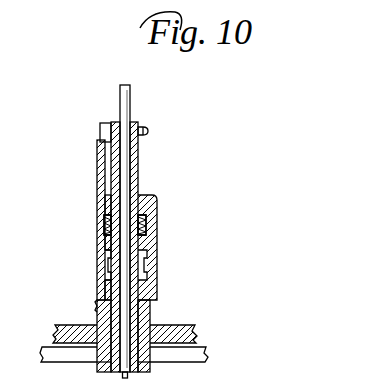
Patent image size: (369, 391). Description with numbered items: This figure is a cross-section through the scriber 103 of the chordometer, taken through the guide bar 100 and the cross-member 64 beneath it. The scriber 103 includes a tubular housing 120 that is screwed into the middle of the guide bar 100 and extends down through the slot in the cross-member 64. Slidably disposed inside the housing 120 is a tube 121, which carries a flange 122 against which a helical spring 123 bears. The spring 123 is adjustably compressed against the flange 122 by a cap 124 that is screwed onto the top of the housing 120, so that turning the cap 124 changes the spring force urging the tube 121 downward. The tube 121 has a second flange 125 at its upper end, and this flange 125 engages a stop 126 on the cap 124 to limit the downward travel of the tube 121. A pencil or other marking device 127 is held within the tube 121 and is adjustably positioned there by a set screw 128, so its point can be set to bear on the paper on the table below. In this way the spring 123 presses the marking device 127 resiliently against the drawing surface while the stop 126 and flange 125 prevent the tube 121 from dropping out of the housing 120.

The scriber 103 is at (158, 257).
The pencil or other marking device 127 is at (139, 164).
The flange 125 is at (100, 129).
The set screw 128 is at (149, 131).
The stop 126 is at (97, 160).
The flange 122 is at (104, 237).
The cap 124 is at (157, 204).
The helical spring 123 is at (157, 228).
The tube 121 is at (96, 293).
The tubular housing 120 is at (151, 312).
The guide bar 100 is at (68, 325).
The cross-member 64 is at (207, 347).